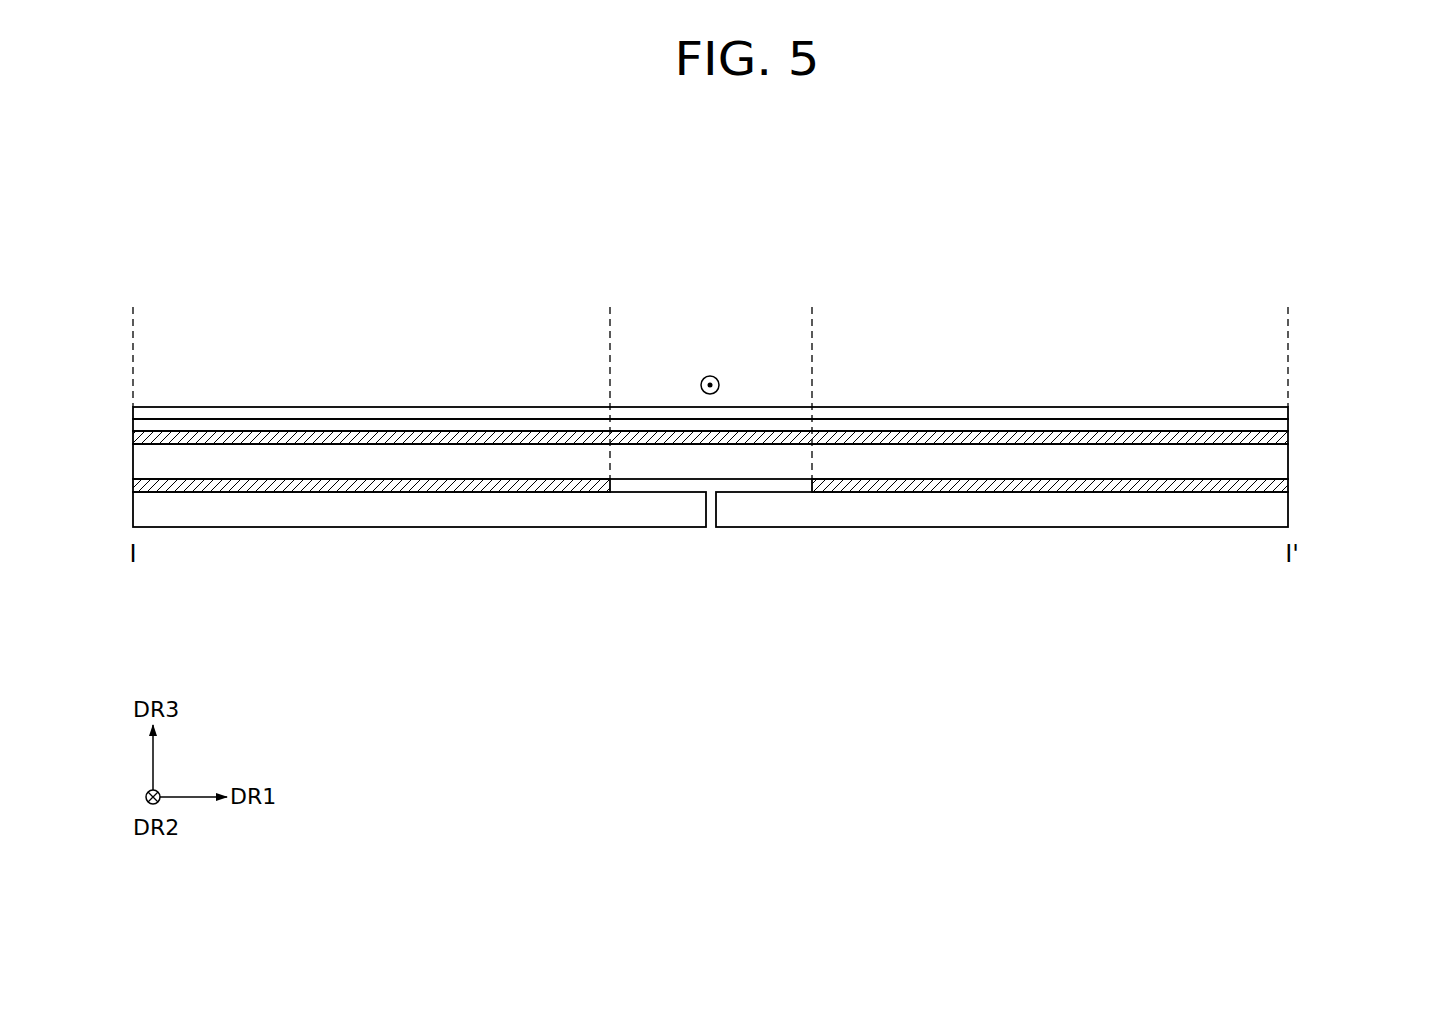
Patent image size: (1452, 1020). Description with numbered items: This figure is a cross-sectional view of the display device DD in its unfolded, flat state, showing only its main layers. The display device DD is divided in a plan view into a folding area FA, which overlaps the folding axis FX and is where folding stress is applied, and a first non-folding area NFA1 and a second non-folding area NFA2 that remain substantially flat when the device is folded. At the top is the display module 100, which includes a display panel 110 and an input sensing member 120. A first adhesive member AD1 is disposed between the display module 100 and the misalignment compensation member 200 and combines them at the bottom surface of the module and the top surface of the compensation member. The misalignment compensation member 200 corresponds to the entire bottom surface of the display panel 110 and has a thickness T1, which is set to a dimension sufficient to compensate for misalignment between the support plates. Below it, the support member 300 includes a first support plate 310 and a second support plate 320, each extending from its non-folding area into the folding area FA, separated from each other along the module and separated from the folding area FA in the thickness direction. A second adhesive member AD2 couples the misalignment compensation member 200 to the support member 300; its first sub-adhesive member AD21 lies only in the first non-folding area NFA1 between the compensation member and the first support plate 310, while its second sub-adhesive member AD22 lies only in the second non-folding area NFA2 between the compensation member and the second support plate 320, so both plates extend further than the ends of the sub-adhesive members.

The display module 100 is at (787, 412).
The input sensing member 120 is at (1278, 413).
The display panel 110 is at (1278, 424).
The first adhesive member AD1 is at (1278, 437).
The misalignment compensation member 200 is at (1278, 462).
The second adhesive member AD2 is at (710, 604).
The first sub-adhesive member AD21 is at (1050, 580).
The second sub-adhesive member AD22 is at (553, 487).
The support member 300 is at (710, 567).
The first support plate 310 is at (1002, 545).
The second support plate 320 is at (642, 515).
The display device DD is at (1240, 252).
The folding axis FX is at (710, 369).
The folding area FA is at (610, 307).
The first non-folding area NFA1 is at (1288, 307).
The second non-folding area NFA2 is at (133, 307).
The thickness T1 is at (133, 444).